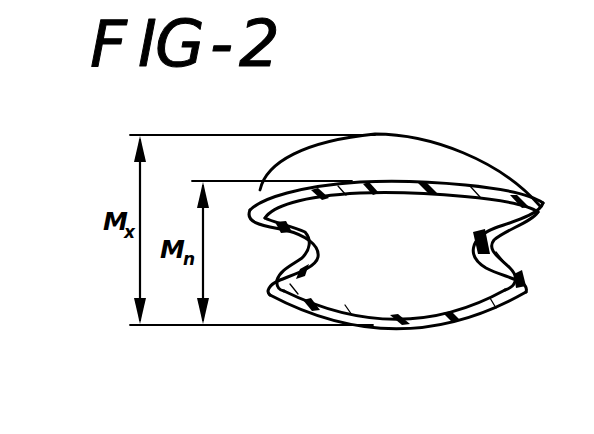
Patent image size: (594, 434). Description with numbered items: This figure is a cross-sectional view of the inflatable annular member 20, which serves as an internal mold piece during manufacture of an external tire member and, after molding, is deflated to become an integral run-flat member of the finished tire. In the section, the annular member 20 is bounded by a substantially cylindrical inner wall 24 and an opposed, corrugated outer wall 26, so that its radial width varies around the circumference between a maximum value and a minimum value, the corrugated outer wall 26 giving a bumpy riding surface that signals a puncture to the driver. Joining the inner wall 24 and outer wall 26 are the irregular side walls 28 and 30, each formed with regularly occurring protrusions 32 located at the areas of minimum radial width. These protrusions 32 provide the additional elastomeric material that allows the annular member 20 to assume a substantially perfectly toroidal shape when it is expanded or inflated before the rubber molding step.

The inflatable annular member 20 is at (401, 263).
The inner wall 24 is at (373, 322).
The outer wall 26 is at (415, 150).
The side wall 28 is at (278, 240).
The side wall 30 is at (517, 256).
The protrusions 32 is at (542, 205).